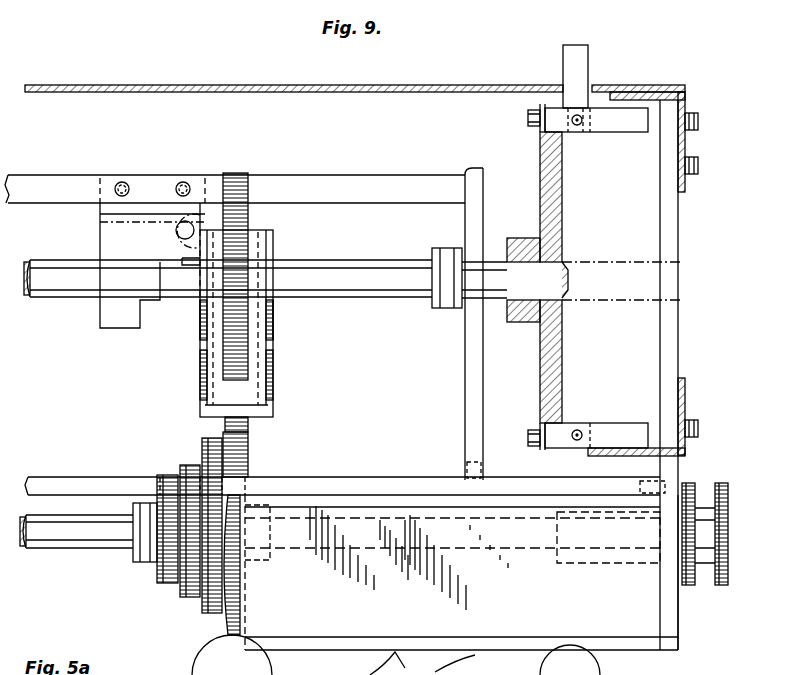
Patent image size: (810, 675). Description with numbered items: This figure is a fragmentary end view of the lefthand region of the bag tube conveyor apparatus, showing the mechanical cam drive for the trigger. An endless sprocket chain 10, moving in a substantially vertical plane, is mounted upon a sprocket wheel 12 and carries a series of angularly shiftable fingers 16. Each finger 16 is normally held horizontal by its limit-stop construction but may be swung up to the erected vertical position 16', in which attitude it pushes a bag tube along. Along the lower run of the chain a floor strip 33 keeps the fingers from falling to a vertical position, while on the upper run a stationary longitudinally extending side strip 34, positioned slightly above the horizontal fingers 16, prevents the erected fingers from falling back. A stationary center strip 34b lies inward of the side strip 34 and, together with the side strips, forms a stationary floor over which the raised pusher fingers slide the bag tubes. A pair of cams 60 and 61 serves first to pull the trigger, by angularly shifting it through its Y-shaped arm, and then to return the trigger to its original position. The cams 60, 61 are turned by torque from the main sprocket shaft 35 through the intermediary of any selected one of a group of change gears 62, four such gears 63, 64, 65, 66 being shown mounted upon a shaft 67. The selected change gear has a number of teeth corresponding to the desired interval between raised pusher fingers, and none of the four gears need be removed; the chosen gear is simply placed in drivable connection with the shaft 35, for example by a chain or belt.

The endless sprocket chain 10 is at (540, 118).
The sprocket wheel 12 is at (556, 356).
The finger 16 is at (596, 137).
The vertical position of finger 16' is at (548, 88).
The floor strip 33 is at (608, 456).
The side strip 34 is at (648, 68).
The center strip 34b is at (255, 85).
The main sprocket shaft 35 is at (344, 300).
The cam 60 is at (692, 483).
The cam 61 is at (727, 485).
The group of change gears 62 is at (163, 444).
The change gear 63 is at (165, 583).
The change gear 64 is at (190, 597).
The change gear 65 is at (208, 614).
The change gear 66 is at (228, 635).
The shaft for change gears 67 is at (60, 548).